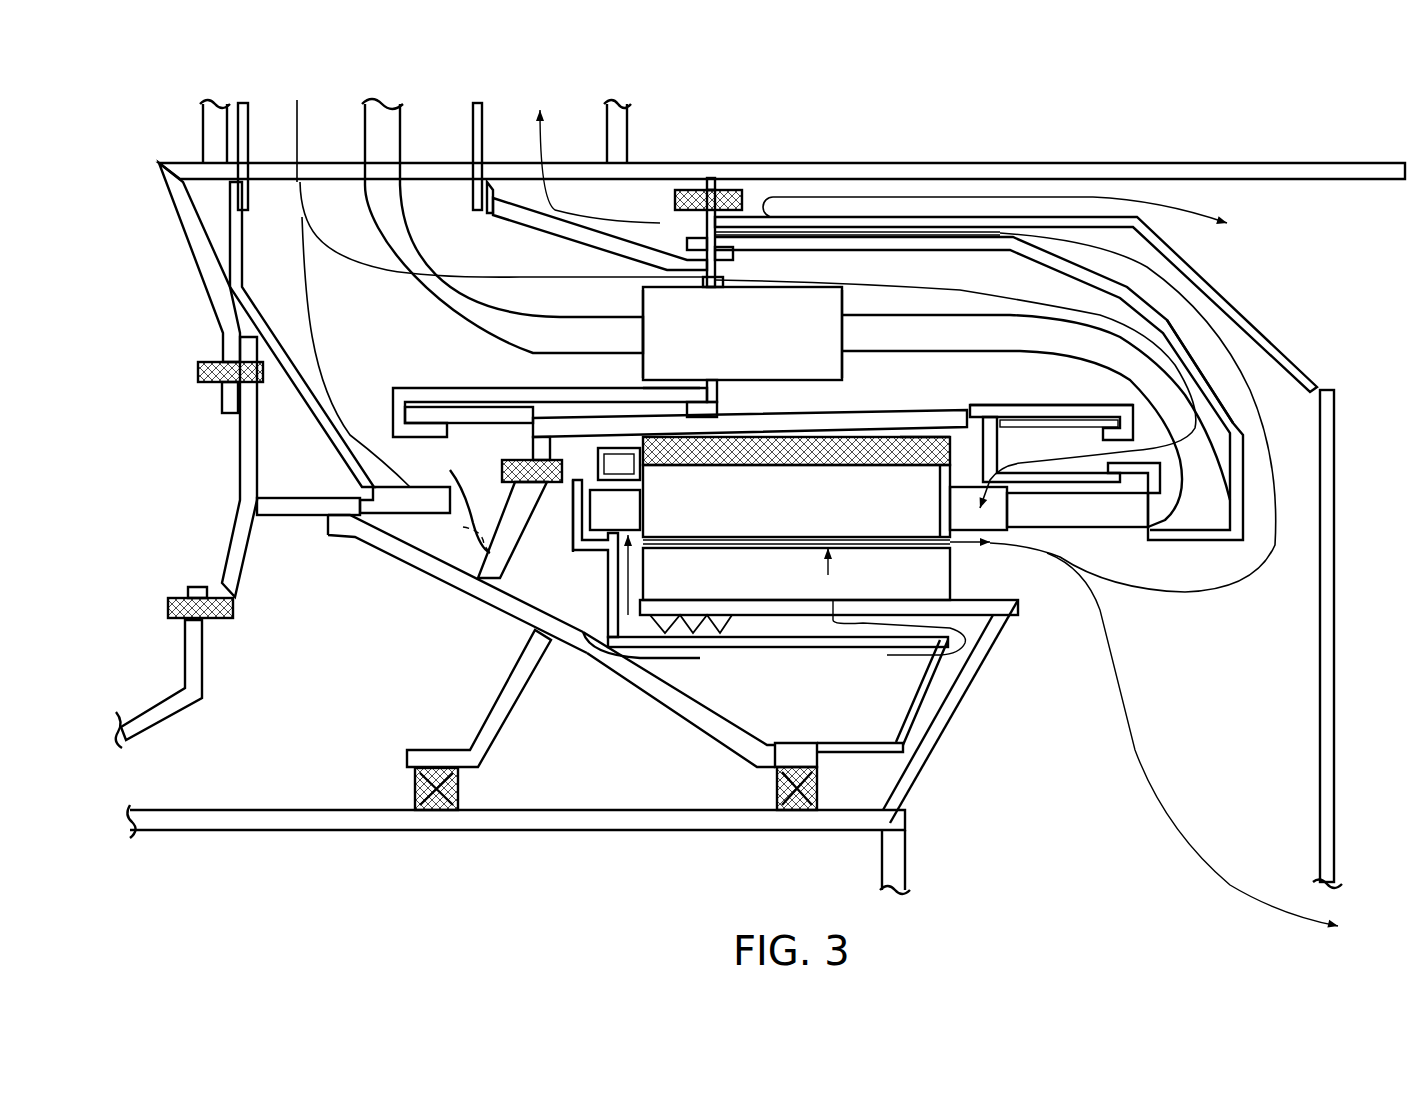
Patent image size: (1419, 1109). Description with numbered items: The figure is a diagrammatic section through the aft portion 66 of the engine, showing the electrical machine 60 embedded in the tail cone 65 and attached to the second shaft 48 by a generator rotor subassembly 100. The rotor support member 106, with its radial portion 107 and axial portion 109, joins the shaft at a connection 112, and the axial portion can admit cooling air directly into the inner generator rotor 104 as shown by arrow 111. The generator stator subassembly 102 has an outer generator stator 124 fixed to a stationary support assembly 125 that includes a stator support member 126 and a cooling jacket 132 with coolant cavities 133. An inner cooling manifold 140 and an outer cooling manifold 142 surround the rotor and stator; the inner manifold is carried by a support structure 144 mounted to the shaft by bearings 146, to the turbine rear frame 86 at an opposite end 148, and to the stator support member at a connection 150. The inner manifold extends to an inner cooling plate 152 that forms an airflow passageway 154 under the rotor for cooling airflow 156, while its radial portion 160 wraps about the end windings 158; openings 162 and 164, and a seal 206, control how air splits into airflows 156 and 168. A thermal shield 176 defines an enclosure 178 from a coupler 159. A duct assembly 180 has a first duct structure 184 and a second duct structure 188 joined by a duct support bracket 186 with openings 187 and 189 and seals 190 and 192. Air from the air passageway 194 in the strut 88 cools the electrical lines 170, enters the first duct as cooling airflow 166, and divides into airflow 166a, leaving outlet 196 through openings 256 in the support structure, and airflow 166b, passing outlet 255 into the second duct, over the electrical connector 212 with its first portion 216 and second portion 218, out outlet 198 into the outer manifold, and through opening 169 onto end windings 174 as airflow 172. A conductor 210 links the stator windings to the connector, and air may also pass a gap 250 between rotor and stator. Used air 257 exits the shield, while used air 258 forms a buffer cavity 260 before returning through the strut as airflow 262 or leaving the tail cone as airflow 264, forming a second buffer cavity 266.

The second shaft 48 is at (632, 817).
The electrical machine 60 is at (927, 485).
The tail cone 65 is at (1257, 163).
The aft portion 66 is at (1303, 200).
The turbine rear frame 86 is at (183, 227).
The strut 88 is at (628, 126).
The generator rotor subassembly 100 is at (990, 763).
The generator stator subassembly 102 is at (980, 403).
The inner generator rotor 104 is at (887, 587).
The rotor support member 106 is at (947, 727).
The radial portion 107 is at (987, 650).
The axial portion 109 is at (737, 612).
The arrow 111 is at (835, 572).
The connection 112 is at (893, 817).
The outer generator stator 124 is at (817, 515).
The stationary support assembly 125 is at (577, 414).
The stator support member 126 is at (627, 423).
The cooling jacket 132 is at (743, 457).
The coolant cavities 133 is at (907, 443).
The inner cooling manifold 140 is at (588, 632).
The outer cooling manifold 142 is at (1060, 427).
The support structure 144 is at (663, 698).
The bearings 146 is at (415, 790).
The opposite end 148 is at (407, 543).
The connection 150 is at (502, 472).
The inner cooling plate 152 is at (763, 640).
The airflow passageway 154 is at (840, 633).
The cooling airflow 156 is at (863, 633).
The end windings 158 is at (617, 517).
The coupler 159 is at (743, 200).
The radial portion 160 is at (608, 610).
The airflow opening 162 is at (940, 677).
The airflow opening 164 is at (573, 488).
The cooling airflow 166 is at (297, 120).
The cooling airflow 166a is at (306, 285).
The cooling airflow 166b is at (520, 275).
The cooling airflow 168 is at (587, 510).
The airflow opening 169 is at (1049, 464).
The electrical lines 170 is at (393, 137).
The cooling airflow 172 is at (936, 281).
The end windings 174 is at (977, 517).
The thermal shield 176 is at (1336, 598).
The enclosure 178 is at (1313, 390).
The duct assembly 180 is at (965, 235).
The first duct structure 184 is at (510, 218).
The duct support bracket 186 is at (725, 275).
The opening 187 is at (720, 282).
The second duct structure 188 is at (823, 250).
The opening 189 is at (707, 223).
The seal 190 is at (700, 247).
The seal 192 is at (722, 398).
The air passageway 194 is at (247, 78).
The outlet 196 is at (410, 487).
The outlet 198 is at (1133, 495).
The seal 206 is at (697, 632).
The conductor 210 is at (1047, 513).
The electrical connector 212 is at (822, 336).
The first portion 216 is at (643, 300).
The second portion 218 is at (838, 370).
The gap 250 is at (723, 543).
The outlet 255 is at (667, 397).
The opening 256 is at (1380, 889).
The used cooling airflow 257 is at (1148, 760).
The used cooling airflow 258 is at (1257, 573).
The airflow buffer cavity 260 is at (1193, 330).
The used cooling airflow 262 is at (643, 220).
The used cooling airflow 264 is at (1163, 200).
The airflow buffer cavity 266 is at (1090, 207).